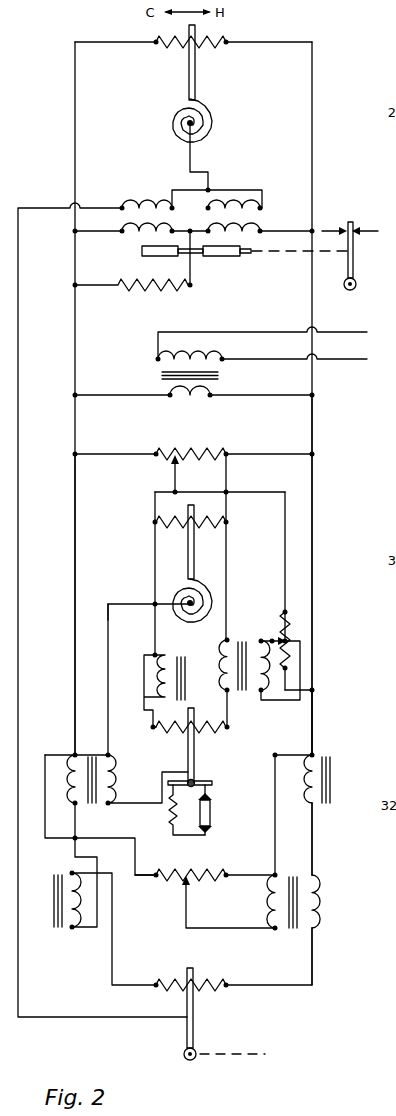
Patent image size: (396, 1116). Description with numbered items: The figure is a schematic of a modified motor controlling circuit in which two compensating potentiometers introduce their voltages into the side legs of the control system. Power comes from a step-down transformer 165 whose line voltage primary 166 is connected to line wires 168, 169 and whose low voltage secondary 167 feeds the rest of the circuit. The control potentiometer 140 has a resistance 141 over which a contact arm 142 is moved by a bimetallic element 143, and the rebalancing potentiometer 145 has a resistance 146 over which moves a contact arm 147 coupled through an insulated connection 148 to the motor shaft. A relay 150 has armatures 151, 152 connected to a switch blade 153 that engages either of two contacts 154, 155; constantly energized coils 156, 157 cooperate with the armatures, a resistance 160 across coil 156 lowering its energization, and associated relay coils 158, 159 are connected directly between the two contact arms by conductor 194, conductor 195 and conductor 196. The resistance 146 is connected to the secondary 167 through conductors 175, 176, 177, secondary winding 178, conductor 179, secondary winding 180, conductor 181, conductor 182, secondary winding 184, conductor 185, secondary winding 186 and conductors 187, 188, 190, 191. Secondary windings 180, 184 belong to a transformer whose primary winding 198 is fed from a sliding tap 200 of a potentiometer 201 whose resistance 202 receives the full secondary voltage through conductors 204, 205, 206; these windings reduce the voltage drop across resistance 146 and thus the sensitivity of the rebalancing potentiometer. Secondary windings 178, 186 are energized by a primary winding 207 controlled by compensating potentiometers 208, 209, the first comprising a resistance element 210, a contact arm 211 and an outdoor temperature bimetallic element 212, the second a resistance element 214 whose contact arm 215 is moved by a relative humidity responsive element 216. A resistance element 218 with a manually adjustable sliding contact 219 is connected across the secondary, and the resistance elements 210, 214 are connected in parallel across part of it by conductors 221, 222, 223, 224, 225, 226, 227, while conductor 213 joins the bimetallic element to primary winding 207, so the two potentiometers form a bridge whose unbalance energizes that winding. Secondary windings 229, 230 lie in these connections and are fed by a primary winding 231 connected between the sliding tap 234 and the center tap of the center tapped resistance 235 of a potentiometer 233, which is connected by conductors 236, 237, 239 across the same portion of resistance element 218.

The control potentiometer 140 is at (218, 69).
The resistance 141 is at (186, 36).
The contact arm 142 is at (187, 70).
The bimetallic element 143 is at (215, 125).
The rebalancing potentiometer 145 is at (204, 1003).
The resistance 146 is at (216, 980).
The contact arm 147 is at (186, 1002).
The insulated connection 148 is at (183, 1052).
The relay 150 is at (282, 207).
The armature 151 is at (150, 253).
The armature 152 is at (234, 258).
The switch blade 153 is at (356, 262).
The contact 154 is at (340, 224).
The contact 155 is at (366, 224).
The relay coil 156 is at (124, 236).
The relay coil 157 is at (264, 231).
The relay coil 158 is at (132, 202).
The relay coil 159 is at (236, 203).
The resistance 160 is at (142, 291).
The step-down transformer 165 is at (148, 376).
The line voltage primary 166 is at (226, 364).
The low voltage secondary 167 is at (176, 397).
The line wire 168 is at (334, 362).
The line wire 169 is at (334, 334).
The conductor 175 is at (128, 398).
The conductor 176 is at (77, 434).
The conductor 177 is at (77, 520).
The secondary winding 178 is at (78, 752).
The conductor 179 is at (78, 822).
The secondary winding 180 is at (68, 930).
The conductor 181 is at (114, 930).
The conductor 182 is at (316, 988).
The secondary winding 184 is at (321, 910).
The conductor 185 is at (316, 848).
The secondary winding 186 is at (314, 756).
The conductor 187 is at (316, 710).
The conductor 188 is at (314, 568).
The conductor 190 is at (315, 428).
The conductor 191 is at (288, 398).
The conductor 194 is at (210, 172).
The conductor 195 is at (174, 190).
The conductor 196 is at (20, 436).
The primary winding 198 is at (278, 934).
The sliding tap 200 is at (194, 882).
The potentiometer 201 is at (196, 866).
The resistance 202 is at (165, 882).
The conductor 204 is at (46, 838).
The conductor 205 is at (250, 875).
The conductor 206 is at (273, 800).
The primary winding 207 is at (114, 776).
The compensating potentiometer 208 is at (212, 536).
The compensating potentiometer 209 is at (200, 742).
The resistance element 210 is at (173, 530).
The contact arm 211 is at (196, 565).
The bimetallic element 212 is at (182, 630).
The conductor 213 is at (126, 602).
The resistance element 214 is at (178, 733).
The contact arm 215 is at (197, 781).
The relative humidity responsive element 216 is at (213, 822).
The resistance element 218 is at (200, 450).
The sliding contact 219 is at (182, 460).
The conductor 221 is at (231, 473).
The conductor 222 is at (230, 586).
The conductor 223 is at (228, 718).
The conductor 224 is at (140, 728).
The conductor 225 is at (152, 618).
The conductor 226 is at (150, 494).
The conductor 227 is at (172, 471).
The secondary winding 229 is at (160, 668).
The secondary winding 230 is at (225, 672).
The primary winding 231 is at (264, 700).
The potentiometer 233 is at (293, 632).
The sliding tap 234 is at (276, 640).
The center tapped resistance 235 is at (282, 616).
The conductor 236 is at (284, 520).
The conductor 237 is at (298, 690).
The conductor 239 is at (262, 454).